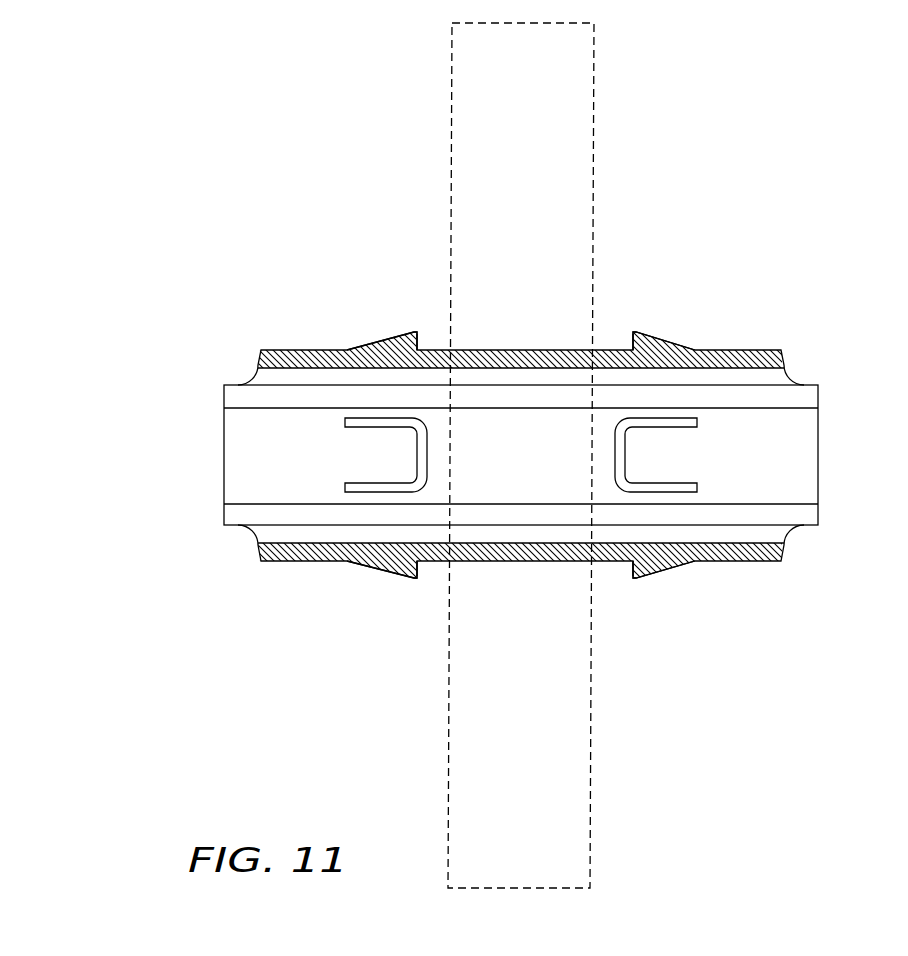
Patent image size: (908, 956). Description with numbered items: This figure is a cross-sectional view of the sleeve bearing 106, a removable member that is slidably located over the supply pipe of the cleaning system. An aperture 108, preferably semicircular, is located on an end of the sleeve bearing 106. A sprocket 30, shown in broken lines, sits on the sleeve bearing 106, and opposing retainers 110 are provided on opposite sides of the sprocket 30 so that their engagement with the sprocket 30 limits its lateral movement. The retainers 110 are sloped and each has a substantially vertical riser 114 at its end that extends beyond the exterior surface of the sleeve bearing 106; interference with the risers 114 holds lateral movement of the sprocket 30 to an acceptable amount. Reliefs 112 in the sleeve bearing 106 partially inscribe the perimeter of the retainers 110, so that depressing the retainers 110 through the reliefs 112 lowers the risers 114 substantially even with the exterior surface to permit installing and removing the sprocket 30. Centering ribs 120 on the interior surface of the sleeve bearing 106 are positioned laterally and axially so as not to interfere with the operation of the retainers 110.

The sprocket 30 is at (452, 72).
The sleeve bearing 106 is at (238, 442).
The aperture 108 is at (250, 383).
The retainers 110 is at (519, 457).
The reliefs 112 is at (352, 488).
The riser 114 is at (418, 340).
The centering ribs 120 is at (810, 397).